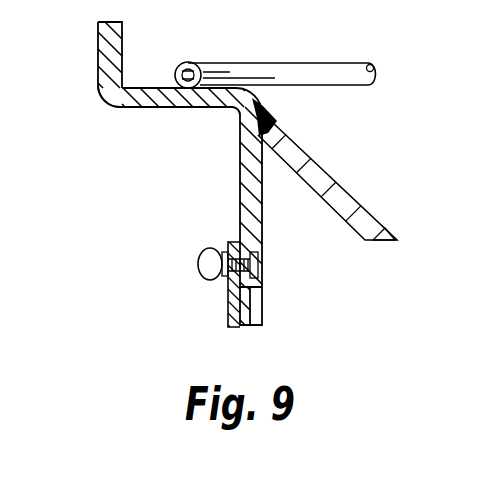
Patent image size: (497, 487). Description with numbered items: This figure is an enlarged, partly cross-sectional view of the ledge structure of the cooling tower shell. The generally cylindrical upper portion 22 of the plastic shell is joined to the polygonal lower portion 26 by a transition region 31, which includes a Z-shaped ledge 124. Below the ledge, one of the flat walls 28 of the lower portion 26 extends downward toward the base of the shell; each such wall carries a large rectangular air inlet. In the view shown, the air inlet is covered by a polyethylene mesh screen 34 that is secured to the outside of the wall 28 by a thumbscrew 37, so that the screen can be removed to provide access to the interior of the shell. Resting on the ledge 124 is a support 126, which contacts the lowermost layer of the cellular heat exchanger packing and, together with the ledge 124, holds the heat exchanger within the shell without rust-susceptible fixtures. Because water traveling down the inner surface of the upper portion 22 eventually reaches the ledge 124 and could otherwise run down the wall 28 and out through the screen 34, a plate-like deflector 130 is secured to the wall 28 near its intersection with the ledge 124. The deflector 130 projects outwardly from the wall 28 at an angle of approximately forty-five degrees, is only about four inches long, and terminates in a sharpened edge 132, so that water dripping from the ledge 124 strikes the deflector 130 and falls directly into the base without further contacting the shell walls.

The upper portion 22 is at (100, 42).
The Z-shaped ledge 124 is at (152, 88).
The transition region 31 is at (139, 123).
The flat wall 28 is at (250, 173).
The polygonal lower portion 26 is at (210, 200).
The support 126 is at (308, 68).
The deflector 130 is at (305, 162).
The sharpened edge 132 is at (388, 242).
The thumbscrew 37 is at (205, 264).
The mesh screen 34 is at (237, 313).